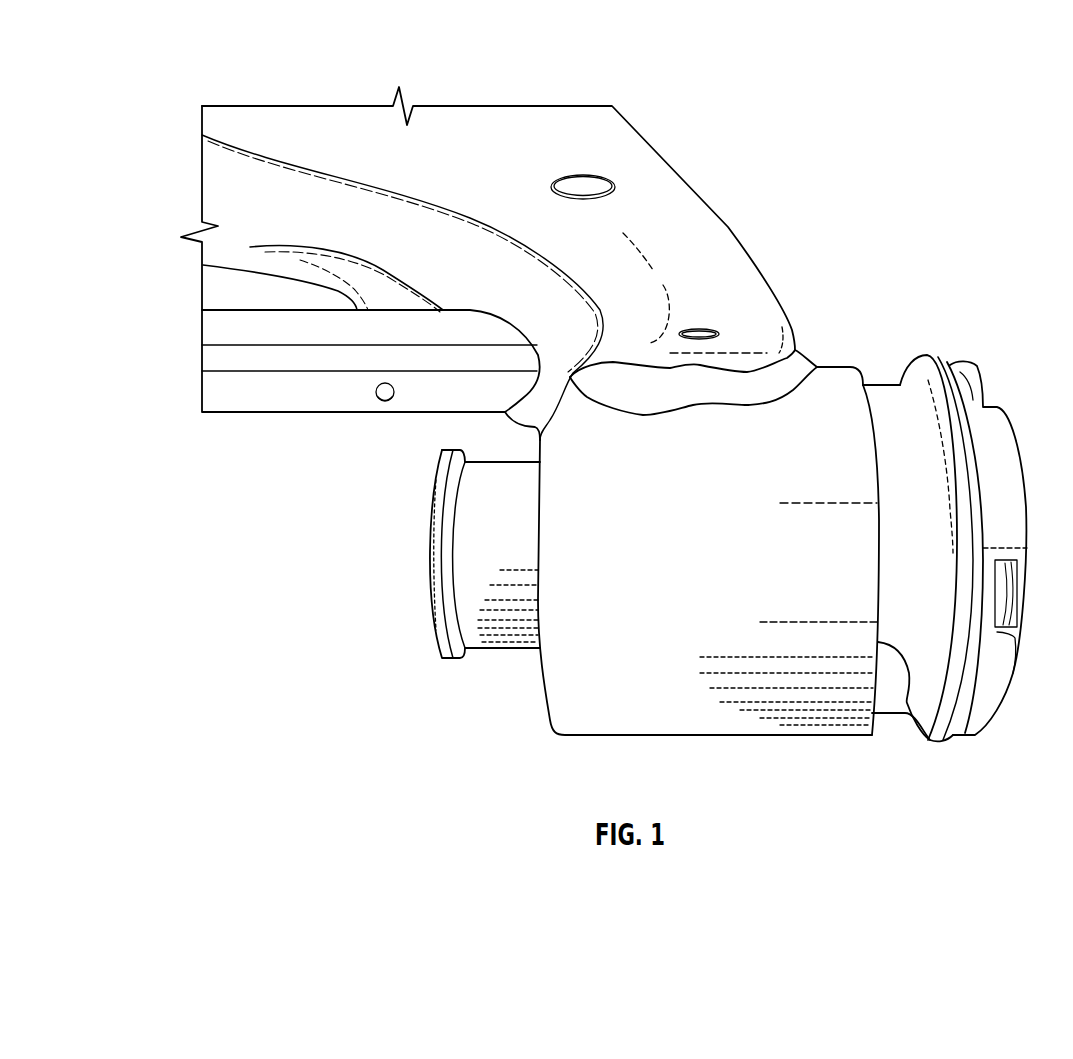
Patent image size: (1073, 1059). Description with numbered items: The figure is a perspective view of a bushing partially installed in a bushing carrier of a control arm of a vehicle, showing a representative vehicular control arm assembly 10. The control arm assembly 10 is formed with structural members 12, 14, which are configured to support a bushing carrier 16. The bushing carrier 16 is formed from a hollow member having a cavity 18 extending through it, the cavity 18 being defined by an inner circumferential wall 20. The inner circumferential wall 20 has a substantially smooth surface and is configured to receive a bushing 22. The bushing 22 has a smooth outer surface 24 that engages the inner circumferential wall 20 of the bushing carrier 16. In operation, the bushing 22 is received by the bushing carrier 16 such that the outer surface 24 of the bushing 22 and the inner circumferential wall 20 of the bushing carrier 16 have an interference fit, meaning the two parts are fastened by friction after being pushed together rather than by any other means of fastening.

The control arm assembly 10 is at (909, 78).
The structural member 12 is at (727, 225).
The structural member 14 is at (283, 412).
The bushing carrier 16 is at (640, 725).
The cavity 18 is at (547, 697).
The inner circumferential wall 20 is at (905, 713).
The bushing 22 is at (1007, 688).
The outer surface 24 is at (881, 383).